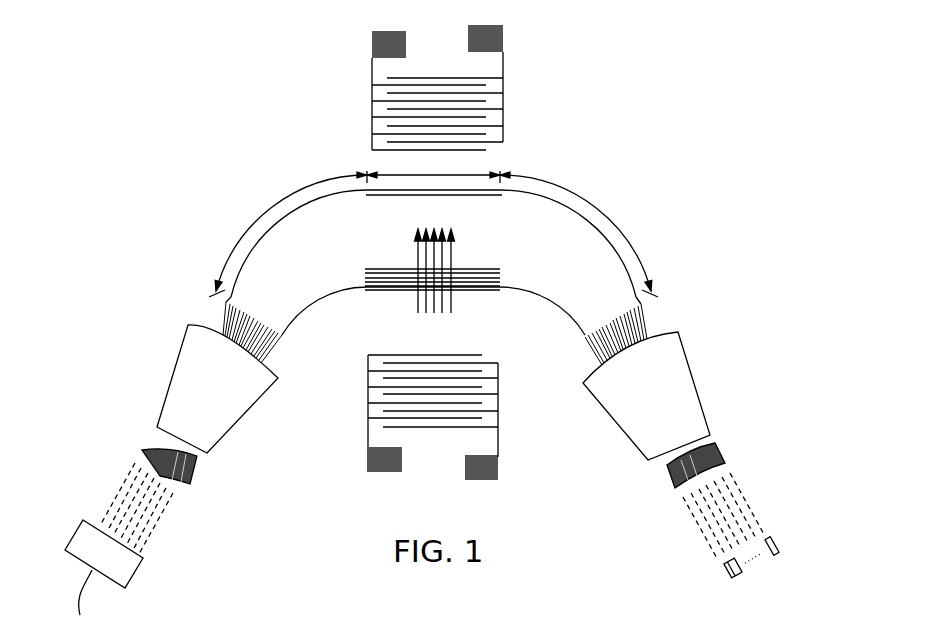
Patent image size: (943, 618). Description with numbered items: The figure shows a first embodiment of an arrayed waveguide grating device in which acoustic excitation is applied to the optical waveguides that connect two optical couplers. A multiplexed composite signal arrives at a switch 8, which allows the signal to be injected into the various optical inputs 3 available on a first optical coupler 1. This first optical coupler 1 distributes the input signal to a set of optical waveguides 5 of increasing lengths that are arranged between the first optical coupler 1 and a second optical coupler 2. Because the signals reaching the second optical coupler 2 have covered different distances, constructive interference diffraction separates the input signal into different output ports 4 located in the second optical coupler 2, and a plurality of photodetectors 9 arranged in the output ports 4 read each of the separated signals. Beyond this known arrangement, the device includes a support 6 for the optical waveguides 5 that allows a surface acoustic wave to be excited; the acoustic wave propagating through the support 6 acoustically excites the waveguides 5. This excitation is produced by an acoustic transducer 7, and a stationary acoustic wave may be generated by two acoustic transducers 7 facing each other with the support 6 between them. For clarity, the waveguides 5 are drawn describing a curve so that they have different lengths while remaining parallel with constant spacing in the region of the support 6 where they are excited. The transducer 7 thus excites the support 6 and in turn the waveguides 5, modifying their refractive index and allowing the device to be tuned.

The first optical coupler 1 is at (203, 383).
The second optical coupler 2 is at (657, 387).
The optical inputs 3 is at (197, 467).
The output ports 4 is at (727, 450).
The optical waveguides 5 is at (278, 270).
The support 6 is at (393, 257).
The acoustic transducer 7 is at (503, 35).
The switch 8 is at (127, 583).
The photodetectors 9 is at (723, 567).